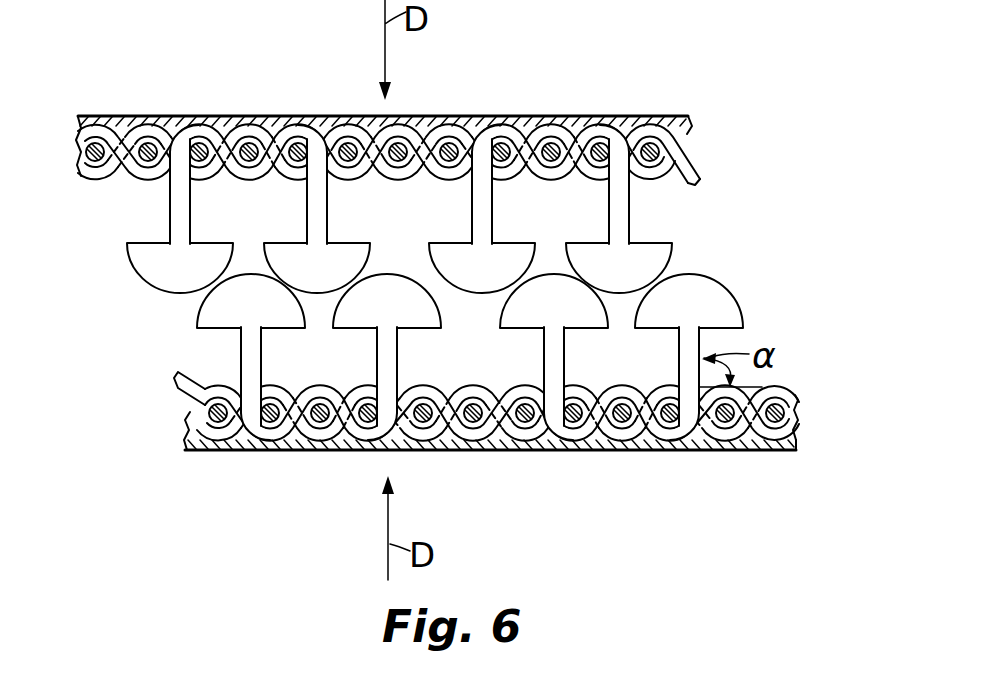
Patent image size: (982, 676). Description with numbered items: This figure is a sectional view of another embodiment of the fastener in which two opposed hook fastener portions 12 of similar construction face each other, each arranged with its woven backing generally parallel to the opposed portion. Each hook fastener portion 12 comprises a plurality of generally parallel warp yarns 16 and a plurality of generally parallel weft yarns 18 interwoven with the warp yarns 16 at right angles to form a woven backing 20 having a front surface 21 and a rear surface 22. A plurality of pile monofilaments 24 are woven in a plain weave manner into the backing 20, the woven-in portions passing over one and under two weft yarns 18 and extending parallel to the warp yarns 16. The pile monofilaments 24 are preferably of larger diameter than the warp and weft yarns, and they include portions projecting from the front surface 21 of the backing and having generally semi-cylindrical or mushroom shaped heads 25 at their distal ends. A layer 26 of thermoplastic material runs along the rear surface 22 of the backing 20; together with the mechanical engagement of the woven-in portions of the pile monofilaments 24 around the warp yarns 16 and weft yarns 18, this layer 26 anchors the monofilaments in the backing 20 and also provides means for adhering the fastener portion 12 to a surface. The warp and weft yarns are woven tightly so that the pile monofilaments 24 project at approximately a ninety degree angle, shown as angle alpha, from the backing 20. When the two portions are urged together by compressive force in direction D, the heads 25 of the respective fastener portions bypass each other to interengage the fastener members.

The hook fastener portion 12 is at (735, 80).
The warp yarns 16 is at (339, 170).
The weft yarns 18 is at (500, 143).
The woven backing 20 is at (712, 149).
The front surface 21 is at (662, 175).
The rear surface 22 is at (603, 133).
The pile monofilaments 24 is at (630, 200).
The heads 25 is at (256, 290).
The layer of thermoplastic material 26 is at (226, 126).